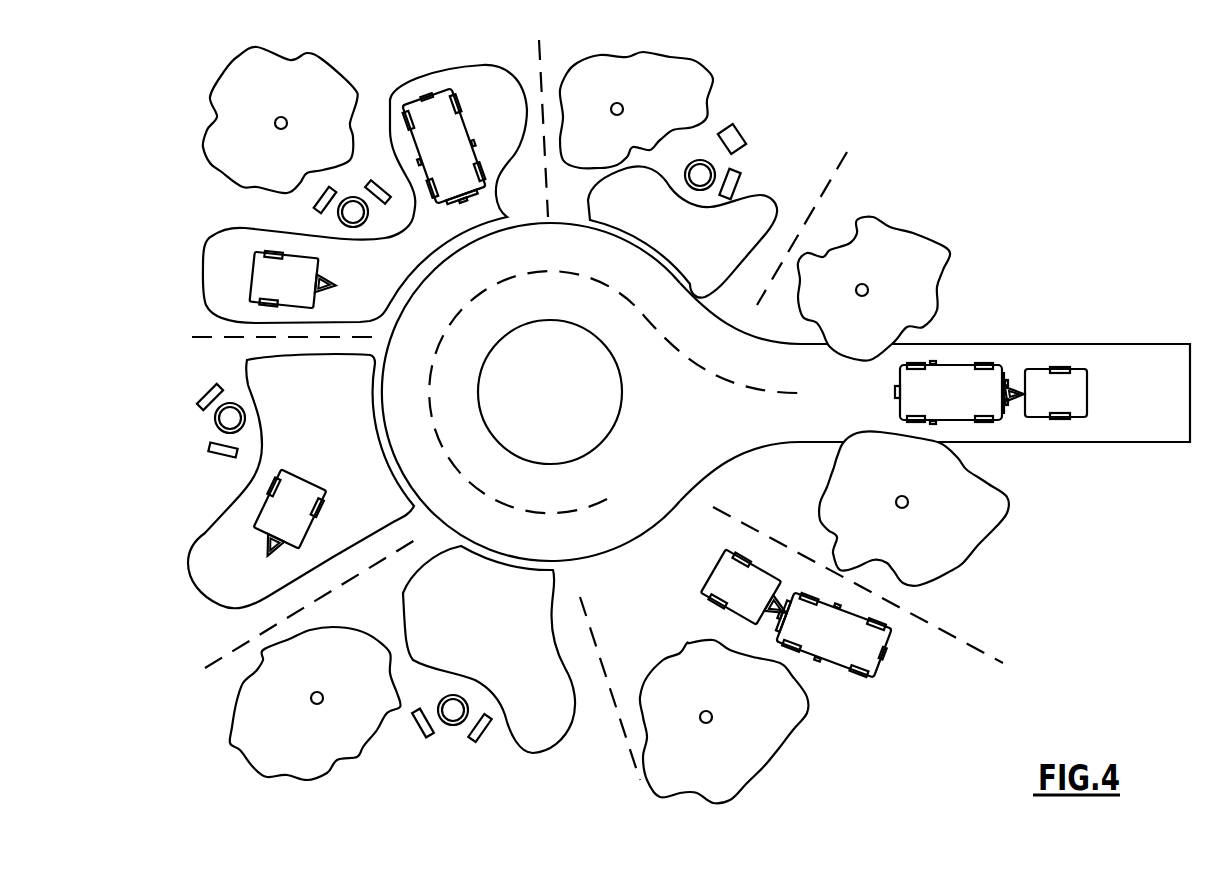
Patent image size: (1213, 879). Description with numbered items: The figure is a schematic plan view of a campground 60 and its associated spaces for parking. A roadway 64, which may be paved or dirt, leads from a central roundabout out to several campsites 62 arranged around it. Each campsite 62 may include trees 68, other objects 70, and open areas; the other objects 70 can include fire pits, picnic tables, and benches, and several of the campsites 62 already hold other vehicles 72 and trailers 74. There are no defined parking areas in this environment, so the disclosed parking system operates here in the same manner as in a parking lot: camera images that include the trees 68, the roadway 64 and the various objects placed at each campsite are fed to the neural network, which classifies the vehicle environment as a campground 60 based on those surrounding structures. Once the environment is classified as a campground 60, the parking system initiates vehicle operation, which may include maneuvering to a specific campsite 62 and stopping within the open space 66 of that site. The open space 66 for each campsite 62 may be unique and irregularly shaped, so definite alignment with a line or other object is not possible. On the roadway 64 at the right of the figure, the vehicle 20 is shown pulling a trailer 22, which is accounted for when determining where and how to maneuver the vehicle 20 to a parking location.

The vehicle 20 is at (958, 395).
The trailer 22 is at (1077, 385).
The campground 60 is at (980, 152).
The campsite 62 is at (536, 191).
The roadway 64 is at (1003, 343).
The open space 66 is at (448, 241).
The trees 68 is at (325, 117).
The other objects 70 is at (747, 102).
The other vehicles 72 is at (447, 133).
The trailers 74 is at (303, 270).